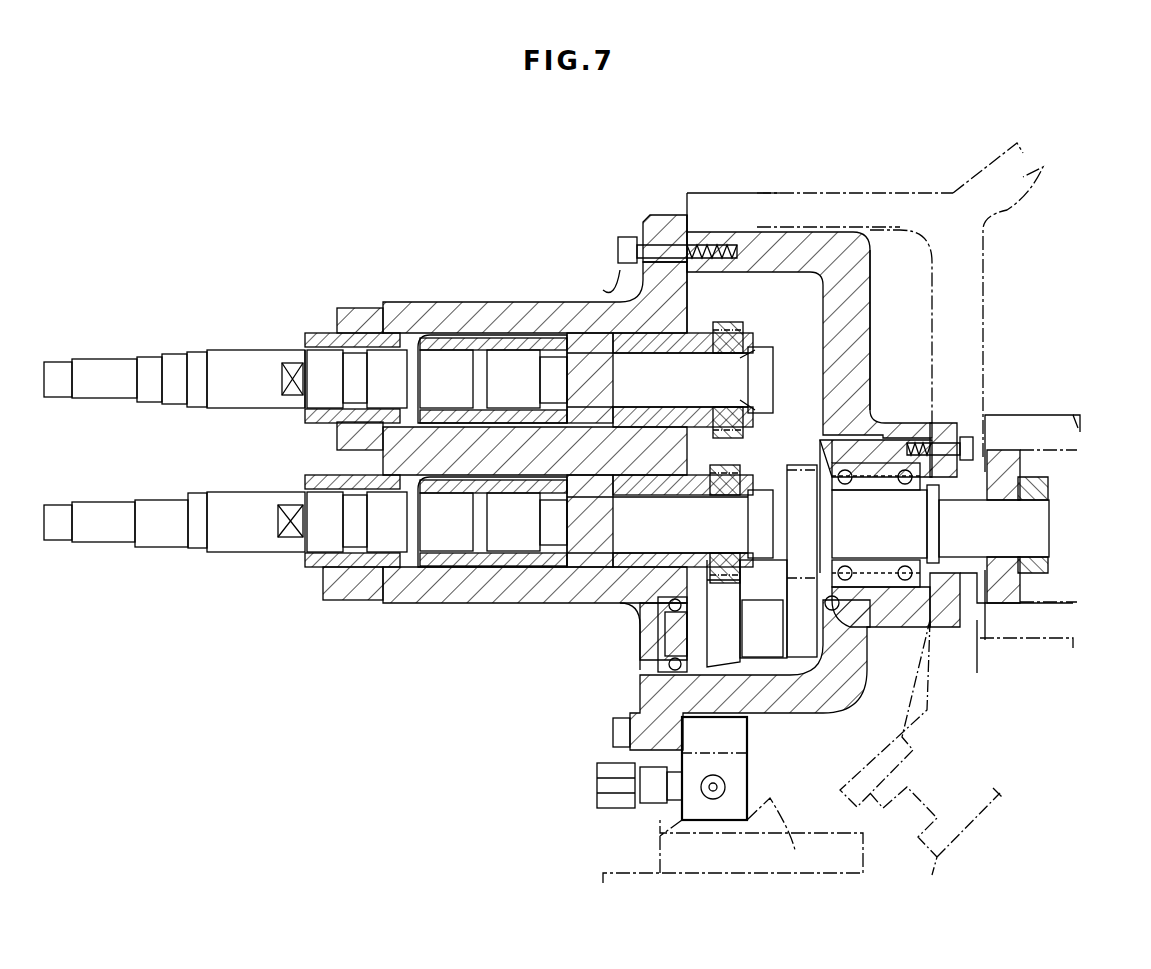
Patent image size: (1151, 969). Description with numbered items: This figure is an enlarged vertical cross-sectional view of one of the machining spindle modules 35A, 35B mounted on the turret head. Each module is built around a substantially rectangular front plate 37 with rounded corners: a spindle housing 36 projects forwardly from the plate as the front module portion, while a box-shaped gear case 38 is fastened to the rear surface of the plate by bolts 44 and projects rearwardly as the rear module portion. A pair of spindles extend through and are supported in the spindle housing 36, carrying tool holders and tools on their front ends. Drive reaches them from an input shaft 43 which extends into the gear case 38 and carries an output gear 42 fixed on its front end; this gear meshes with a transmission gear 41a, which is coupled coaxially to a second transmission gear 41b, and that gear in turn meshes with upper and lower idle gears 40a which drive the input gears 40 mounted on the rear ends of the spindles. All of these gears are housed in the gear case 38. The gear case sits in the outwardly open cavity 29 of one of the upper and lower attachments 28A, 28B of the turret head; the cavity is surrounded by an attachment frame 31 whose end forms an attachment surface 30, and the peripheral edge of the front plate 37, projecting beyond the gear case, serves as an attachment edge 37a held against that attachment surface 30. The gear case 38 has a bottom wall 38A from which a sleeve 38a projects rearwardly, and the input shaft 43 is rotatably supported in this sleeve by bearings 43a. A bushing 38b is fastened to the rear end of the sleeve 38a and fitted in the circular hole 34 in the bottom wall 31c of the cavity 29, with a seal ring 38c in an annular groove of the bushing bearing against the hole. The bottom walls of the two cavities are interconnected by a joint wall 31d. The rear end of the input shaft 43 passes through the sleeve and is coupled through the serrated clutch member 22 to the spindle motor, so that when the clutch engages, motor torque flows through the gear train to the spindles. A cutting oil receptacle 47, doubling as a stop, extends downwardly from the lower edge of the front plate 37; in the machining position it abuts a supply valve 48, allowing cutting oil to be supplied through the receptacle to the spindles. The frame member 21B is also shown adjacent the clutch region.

The frame member 21B is at (1068, 413).
The serrated clutch member 22 is at (1007, 437).
The upper attachment 28A is at (773, 192).
The lower attachment 28B is at (823, 144).
The cavity 29 is at (904, 270).
The attachment surface 30 is at (683, 200).
The attachment frame 31 is at (817, 190).
The bottom wall 31c is at (963, 297).
The joint wall 31d is at (1067, 200).
The circular hole 34 is at (993, 640).
The machining spindle module 35A is at (573, 250).
The machining spindle module 35B is at (450, 281).
The spindle housing 36 is at (443, 308).
The front plate 37 is at (657, 222).
The attachment edge 37a is at (703, 207).
The gear case 38 is at (827, 253).
The bottom wall 38A is at (850, 320).
The sleeve 38a is at (897, 430).
The bushing 38b is at (933, 627).
The seal ring 38c is at (947, 633).
The input gear 40 is at (730, 320).
The idle gear 40a is at (743, 443).
The transmission gear 41a is at (793, 672).
The transmission gear 41b is at (637, 667).
The output gear 42 is at (827, 443).
The input shaft 43 is at (888, 543).
The bearing 43a is at (842, 587).
The bolt 44 is at (620, 262).
The cutting oil receptacle 47 is at (715, 808).
The supply valve 48 is at (770, 797).